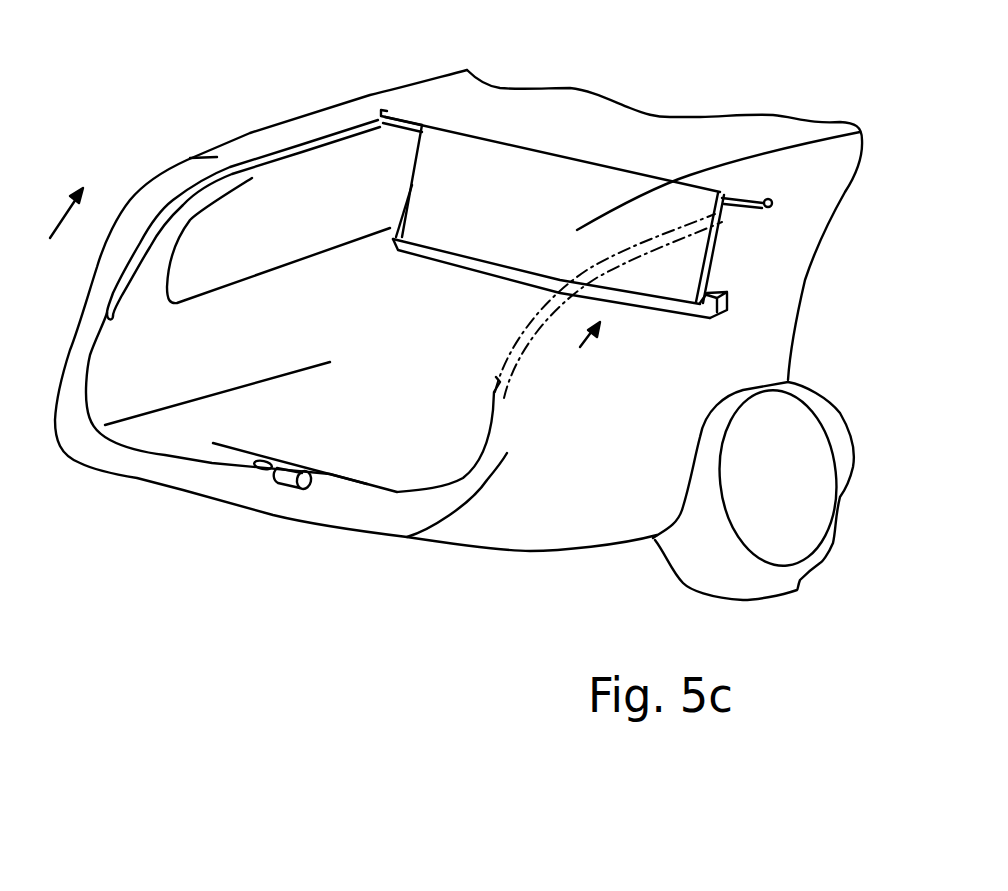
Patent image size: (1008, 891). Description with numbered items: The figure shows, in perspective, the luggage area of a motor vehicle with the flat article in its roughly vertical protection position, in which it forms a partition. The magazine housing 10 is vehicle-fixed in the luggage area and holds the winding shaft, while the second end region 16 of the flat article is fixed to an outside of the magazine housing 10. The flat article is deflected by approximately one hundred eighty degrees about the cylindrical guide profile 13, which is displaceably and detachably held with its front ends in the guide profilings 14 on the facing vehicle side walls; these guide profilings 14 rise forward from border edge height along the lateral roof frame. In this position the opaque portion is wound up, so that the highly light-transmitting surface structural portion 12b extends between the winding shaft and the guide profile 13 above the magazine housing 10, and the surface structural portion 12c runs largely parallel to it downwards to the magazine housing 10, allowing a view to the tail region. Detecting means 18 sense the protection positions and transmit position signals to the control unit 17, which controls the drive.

The magazine housing 10 is at (730, 306).
The surface structural portion 12b is at (720, 255).
The surface structural portion 12c is at (668, 282).
The guide profile 13 is at (403, 128).
The guide profilings 14 is at (350, 130).
The second end region 16 is at (457, 262).
The control unit 17 is at (277, 487).
The detecting means 18 is at (183, 457).